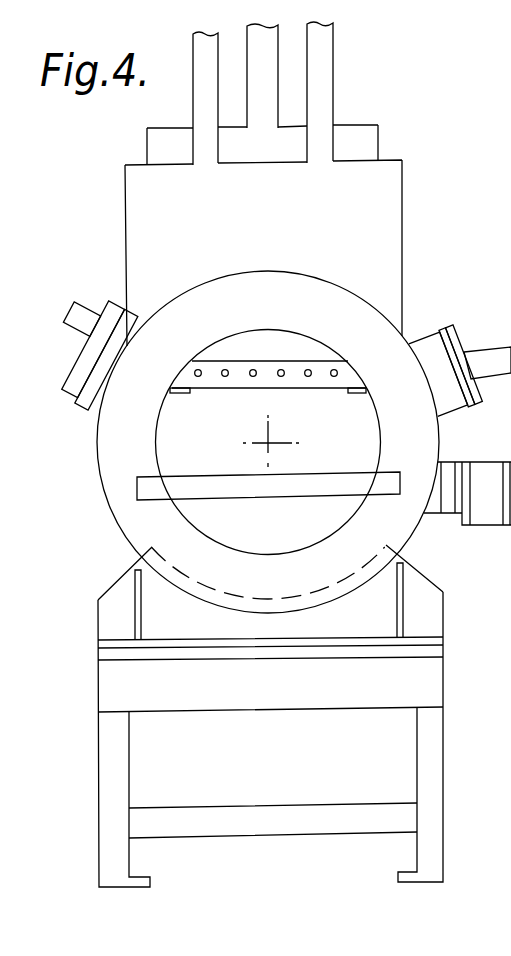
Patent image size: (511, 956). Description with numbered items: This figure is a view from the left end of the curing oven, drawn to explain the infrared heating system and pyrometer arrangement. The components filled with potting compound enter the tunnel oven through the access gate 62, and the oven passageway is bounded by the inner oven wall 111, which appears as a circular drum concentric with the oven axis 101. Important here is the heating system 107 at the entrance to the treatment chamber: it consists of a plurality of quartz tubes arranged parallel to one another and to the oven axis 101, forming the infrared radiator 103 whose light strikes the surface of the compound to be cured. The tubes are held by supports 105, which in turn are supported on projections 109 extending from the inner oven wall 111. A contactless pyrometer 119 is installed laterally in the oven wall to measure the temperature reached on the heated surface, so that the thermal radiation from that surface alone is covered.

The access gate 62 is at (383, 213).
The oven axis 101 is at (277, 438).
The infrared radiator 103 is at (312, 370).
The supports 105 is at (397, 318).
The heating system 107 is at (295, 347).
The projections 109 is at (177, 393).
The inner oven wall 111 is at (157, 464).
The pyrometer 119 is at (490, 362).